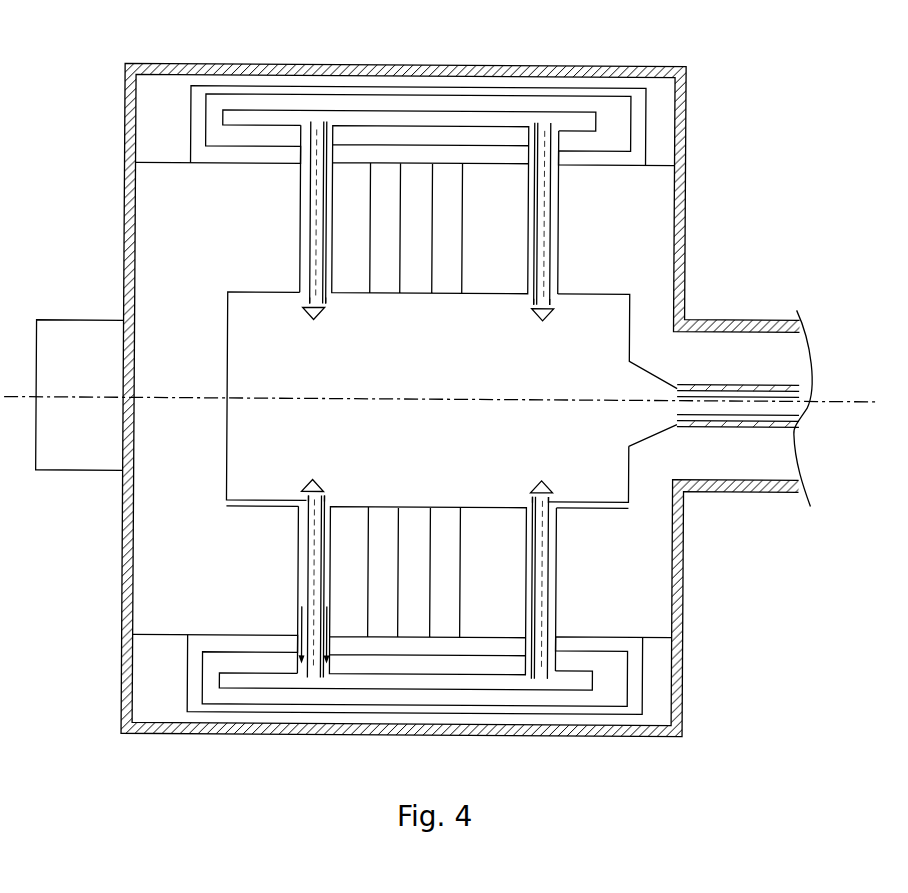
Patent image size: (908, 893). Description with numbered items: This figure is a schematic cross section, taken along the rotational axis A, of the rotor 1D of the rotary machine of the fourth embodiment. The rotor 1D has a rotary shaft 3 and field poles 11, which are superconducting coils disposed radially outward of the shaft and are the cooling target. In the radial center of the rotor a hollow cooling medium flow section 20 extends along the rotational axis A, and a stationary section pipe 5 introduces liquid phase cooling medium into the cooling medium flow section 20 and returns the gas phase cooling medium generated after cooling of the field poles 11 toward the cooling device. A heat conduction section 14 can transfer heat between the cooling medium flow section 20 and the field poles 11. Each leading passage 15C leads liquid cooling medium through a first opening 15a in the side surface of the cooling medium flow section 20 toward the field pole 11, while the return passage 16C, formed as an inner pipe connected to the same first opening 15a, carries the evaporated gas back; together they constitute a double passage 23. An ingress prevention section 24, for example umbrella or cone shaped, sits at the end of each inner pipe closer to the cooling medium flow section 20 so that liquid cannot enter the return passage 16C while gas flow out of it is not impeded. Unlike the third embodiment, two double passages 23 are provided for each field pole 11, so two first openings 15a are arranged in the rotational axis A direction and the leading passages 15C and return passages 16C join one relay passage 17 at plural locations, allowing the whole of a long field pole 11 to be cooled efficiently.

The rotor 1D is at (716, 84).
The rotary shaft 3 is at (66, 322).
The stationary section pipe 5 is at (751, 430).
The field pole 11 is at (622, 127).
The heat conduction section 14 is at (448, 222).
The leading passage 15C is at (304, 191).
The return passage 16C is at (318, 231).
The first opening 15a is at (333, 300).
The relay passage 17 is at (413, 118).
The cooling medium flow section 20 is at (451, 430).
The double passage 23 is at (290, 259).
The ingress prevention section 24 is at (308, 314).
The rotational axis A is at (867, 404).